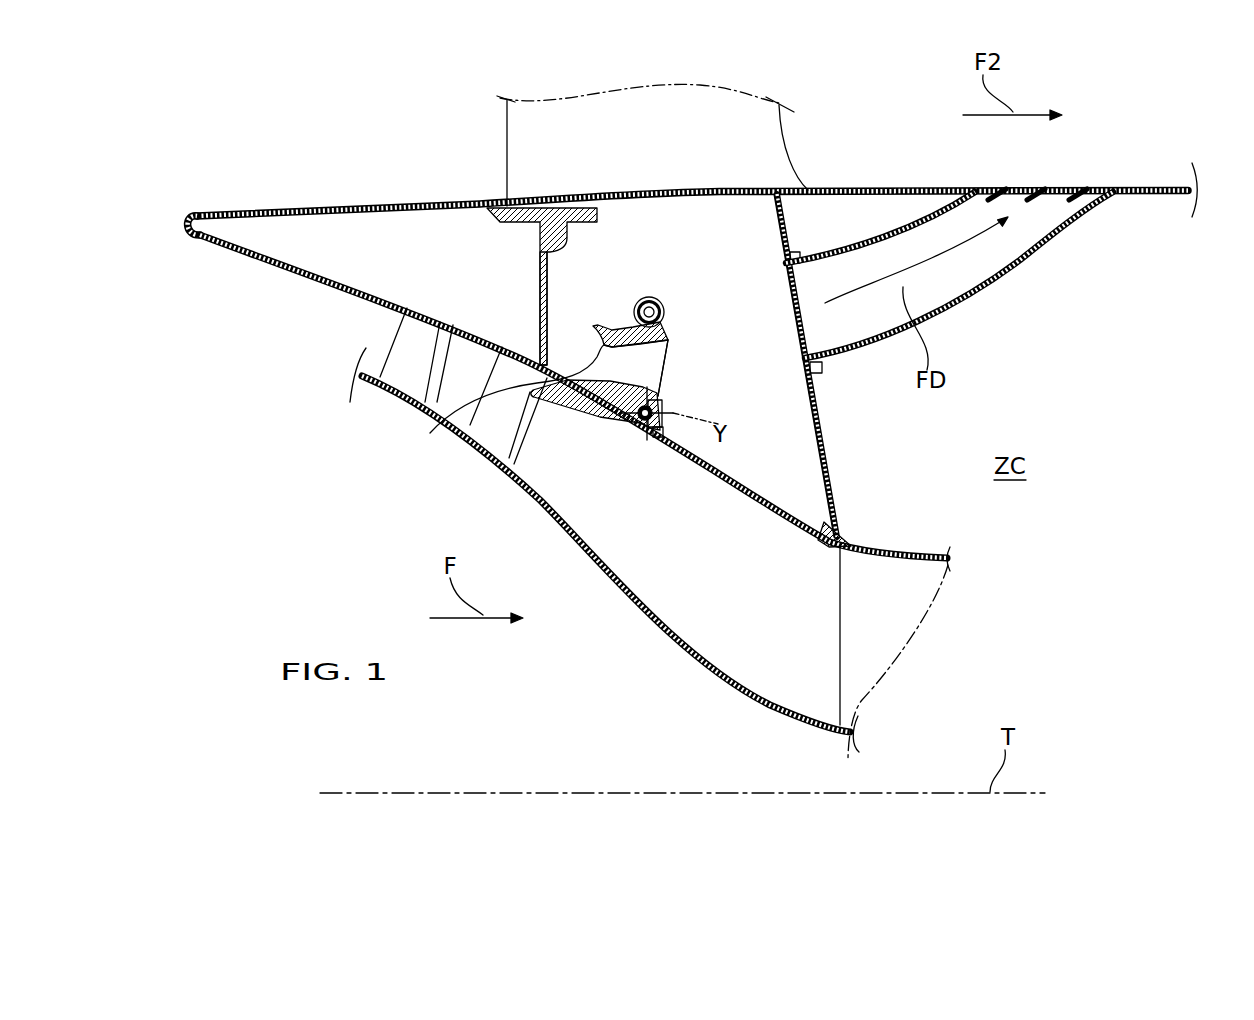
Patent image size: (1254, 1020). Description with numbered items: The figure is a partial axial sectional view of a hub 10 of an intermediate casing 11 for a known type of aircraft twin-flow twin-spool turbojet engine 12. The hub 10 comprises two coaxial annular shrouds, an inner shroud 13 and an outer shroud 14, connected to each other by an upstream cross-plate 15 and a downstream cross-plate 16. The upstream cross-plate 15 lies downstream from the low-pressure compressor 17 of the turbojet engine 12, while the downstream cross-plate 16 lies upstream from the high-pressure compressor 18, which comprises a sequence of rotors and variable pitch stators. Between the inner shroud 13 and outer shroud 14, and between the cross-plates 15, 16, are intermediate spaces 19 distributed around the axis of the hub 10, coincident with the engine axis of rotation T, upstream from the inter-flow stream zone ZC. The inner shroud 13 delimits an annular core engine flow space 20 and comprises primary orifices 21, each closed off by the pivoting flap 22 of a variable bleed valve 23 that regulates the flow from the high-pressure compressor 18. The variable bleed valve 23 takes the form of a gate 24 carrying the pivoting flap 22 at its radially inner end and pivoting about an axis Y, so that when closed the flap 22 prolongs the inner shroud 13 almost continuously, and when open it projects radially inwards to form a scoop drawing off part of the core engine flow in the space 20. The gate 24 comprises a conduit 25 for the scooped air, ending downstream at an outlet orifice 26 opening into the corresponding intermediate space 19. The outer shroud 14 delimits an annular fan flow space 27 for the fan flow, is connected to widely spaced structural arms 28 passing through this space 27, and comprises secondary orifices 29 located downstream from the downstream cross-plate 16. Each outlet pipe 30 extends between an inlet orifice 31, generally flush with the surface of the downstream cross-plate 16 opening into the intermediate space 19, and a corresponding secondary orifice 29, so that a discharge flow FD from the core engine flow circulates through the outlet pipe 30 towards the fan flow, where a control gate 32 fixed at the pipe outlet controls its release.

The hub 10 is at (600, 525).
The intermediate casing 11 is at (482, 120).
The turbojet engine 12 is at (280, 164).
The inner shroud 13 is at (737, 497).
The outer shroud 14 is at (640, 191).
The upstream cross-plate 15 is at (538, 287).
The downstream cross-plate 16 is at (827, 425).
The low-pressure compressor 17 is at (405, 345).
The high-pressure compressor 18 is at (888, 603).
The intermediate space 19 is at (760, 450).
The core engine flow space 20 is at (677, 581).
The primary orifice 21 is at (505, 404).
The pivoting flap 22 is at (587, 417).
The variable bleed valve 23 is at (590, 318).
The gate 24 is at (648, 297).
The conduit 25 is at (616, 378).
The outlet orifice 26 is at (667, 370).
The fan flow space 27 is at (877, 122).
The structural arm 28 is at (520, 157).
The secondary orifice 29 is at (1020, 187).
The outlet pipe 30 is at (960, 317).
The inlet orifice 31 is at (790, 313).
The control gate 32 is at (1000, 187).